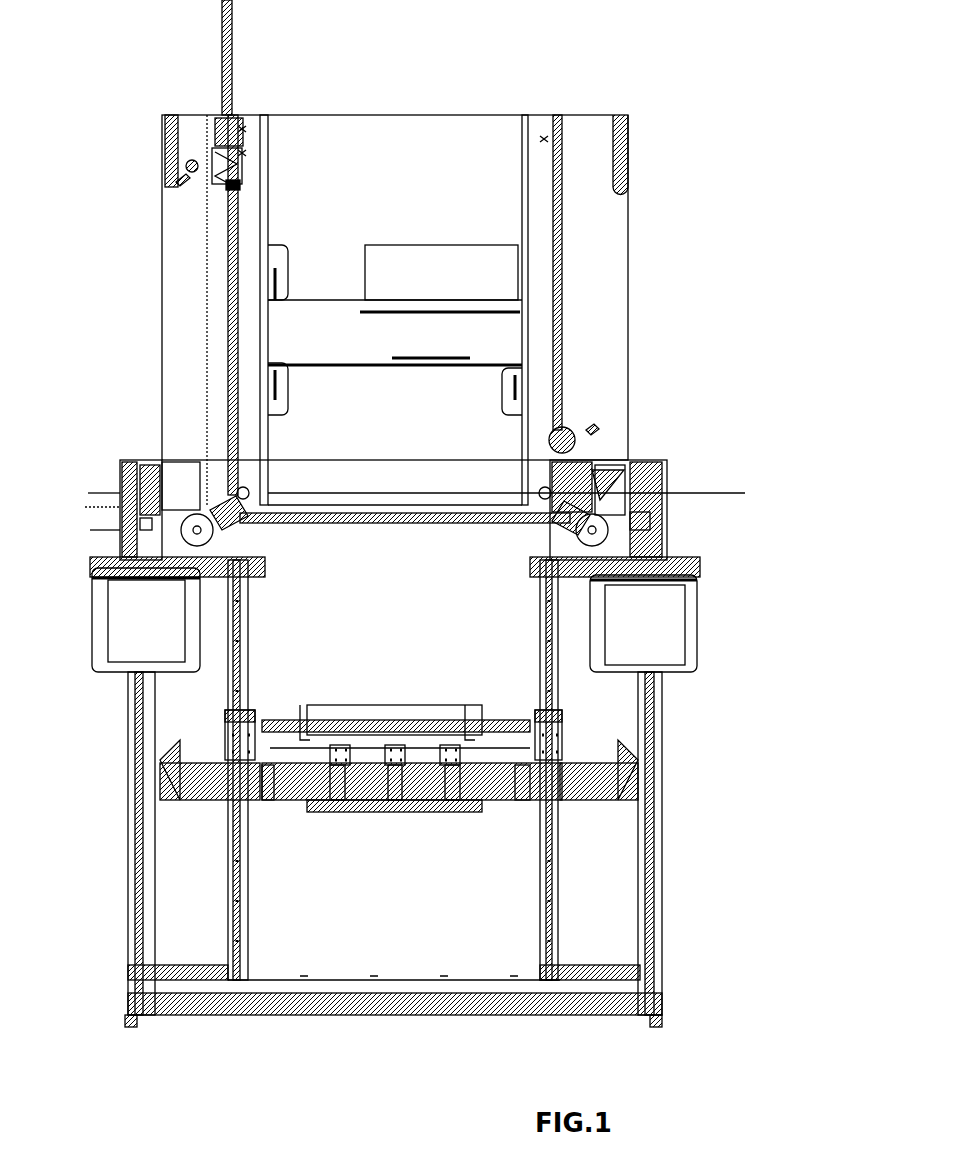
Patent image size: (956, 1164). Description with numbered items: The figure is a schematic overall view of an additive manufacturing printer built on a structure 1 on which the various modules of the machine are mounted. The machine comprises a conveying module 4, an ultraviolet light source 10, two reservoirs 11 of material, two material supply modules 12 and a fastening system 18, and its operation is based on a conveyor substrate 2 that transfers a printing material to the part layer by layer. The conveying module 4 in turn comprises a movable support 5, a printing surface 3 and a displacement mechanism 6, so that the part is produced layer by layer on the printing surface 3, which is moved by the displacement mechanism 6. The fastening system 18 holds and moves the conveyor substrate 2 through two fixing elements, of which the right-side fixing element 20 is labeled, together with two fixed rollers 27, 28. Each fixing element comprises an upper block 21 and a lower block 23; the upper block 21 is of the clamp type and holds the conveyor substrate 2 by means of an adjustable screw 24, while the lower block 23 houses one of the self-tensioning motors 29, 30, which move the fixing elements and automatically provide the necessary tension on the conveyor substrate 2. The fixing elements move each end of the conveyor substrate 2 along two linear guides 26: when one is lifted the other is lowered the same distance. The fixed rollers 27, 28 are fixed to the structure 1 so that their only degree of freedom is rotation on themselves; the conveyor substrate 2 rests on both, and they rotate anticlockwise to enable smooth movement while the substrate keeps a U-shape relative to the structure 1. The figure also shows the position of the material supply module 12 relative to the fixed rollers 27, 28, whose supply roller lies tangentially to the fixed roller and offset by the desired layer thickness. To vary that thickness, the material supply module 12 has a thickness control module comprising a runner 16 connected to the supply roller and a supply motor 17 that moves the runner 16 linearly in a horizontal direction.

The structure 1 is at (106, 780).
The conveyor substrate 2 is at (205, 355).
The printing surface 3 is at (385, 702).
The conveying module 4 is at (384, 843).
The movable support 5 is at (562, 718).
The displacement mechanism 6 is at (562, 748).
The ultraviolet light source 10 is at (490, 332).
The reservoirs 11 is at (665, 618).
The material supply modules 12 is at (622, 470).
The runner 16 is at (92, 529).
The supply motor 17 is at (158, 518).
The fastening system 18 is at (250, 108).
The fixing element 20 is at (185, 180).
The upper block 21 is at (575, 430).
The lower block 23 is at (228, 165).
The adjustable screw 24 is at (185, 170).
The linear guides 26 is at (562, 140).
The fixed roller 27 is at (240, 525).
The fixed roller 28 is at (238, 213).
The self-tensioning motor 29 is at (226, 188).
The self-tensioning motor 30 is at (538, 492).